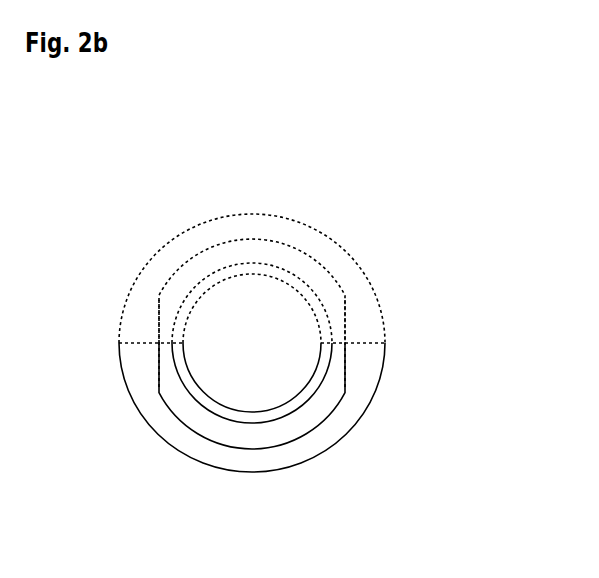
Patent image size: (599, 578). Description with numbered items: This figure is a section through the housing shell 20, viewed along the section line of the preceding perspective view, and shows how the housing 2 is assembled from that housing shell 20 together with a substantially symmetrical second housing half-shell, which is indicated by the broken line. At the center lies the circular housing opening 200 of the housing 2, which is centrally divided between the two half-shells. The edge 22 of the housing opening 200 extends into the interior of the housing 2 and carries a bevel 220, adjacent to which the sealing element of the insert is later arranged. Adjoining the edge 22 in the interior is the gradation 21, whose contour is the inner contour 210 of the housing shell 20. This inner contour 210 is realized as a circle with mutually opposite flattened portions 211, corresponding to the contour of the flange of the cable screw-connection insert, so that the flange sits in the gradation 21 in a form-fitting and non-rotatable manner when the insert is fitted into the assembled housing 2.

The housing 2 is at (243, 150).
The housing shell 20 is at (352, 282).
The gradation 21 is at (306, 438).
The inner contour 210 is at (303, 432).
The flattened portions 211 is at (160, 343).
The edge 22 is at (188, 320).
The bevel 220 is at (322, 320).
The housing opening 200 is at (258, 300).